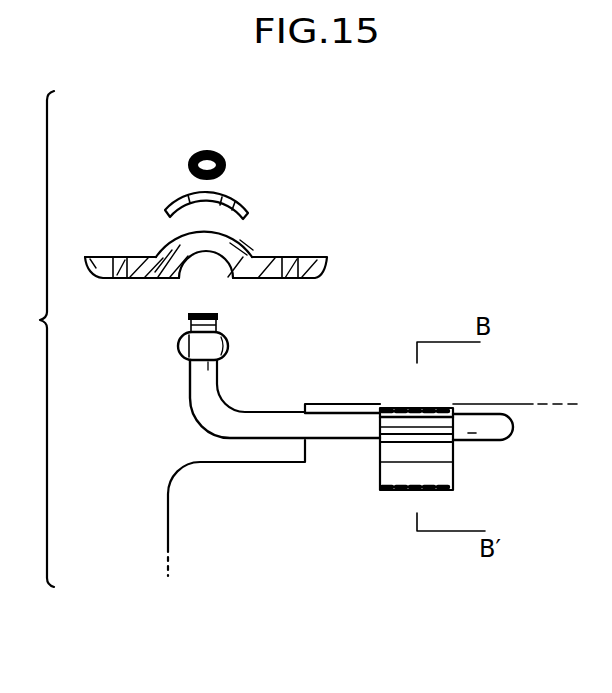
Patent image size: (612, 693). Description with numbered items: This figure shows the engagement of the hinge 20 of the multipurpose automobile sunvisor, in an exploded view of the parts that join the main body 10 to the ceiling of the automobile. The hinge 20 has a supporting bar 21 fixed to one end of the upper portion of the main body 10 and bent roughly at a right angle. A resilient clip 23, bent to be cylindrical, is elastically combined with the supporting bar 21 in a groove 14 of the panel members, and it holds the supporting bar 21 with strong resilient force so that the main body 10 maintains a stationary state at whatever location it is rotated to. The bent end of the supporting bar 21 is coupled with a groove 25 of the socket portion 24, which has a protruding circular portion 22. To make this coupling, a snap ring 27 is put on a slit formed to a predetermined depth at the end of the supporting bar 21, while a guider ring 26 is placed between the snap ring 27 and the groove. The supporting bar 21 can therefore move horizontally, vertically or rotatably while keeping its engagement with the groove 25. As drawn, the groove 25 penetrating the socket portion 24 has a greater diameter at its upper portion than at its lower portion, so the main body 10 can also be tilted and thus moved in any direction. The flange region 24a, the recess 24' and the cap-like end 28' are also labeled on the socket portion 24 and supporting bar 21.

The main body 10 is at (142, 518).
The groove 14 is at (455, 472).
The hinge 20 is at (160, 334).
The supporting bar 21 is at (265, 423).
The protruding circular portion 22 is at (228, 346).
The resilient clip 23 is at (440, 409).
The socket portion 24 is at (231, 241).
The flange of seat member 24a is at (120, 258).
The inner recess of seat member 24' is at (161, 283).
The groove 25 is at (240, 243).
The guider ring 26 is at (233, 197).
The snap ring 27 is at (192, 152).
The cap 28' is at (238, 316).